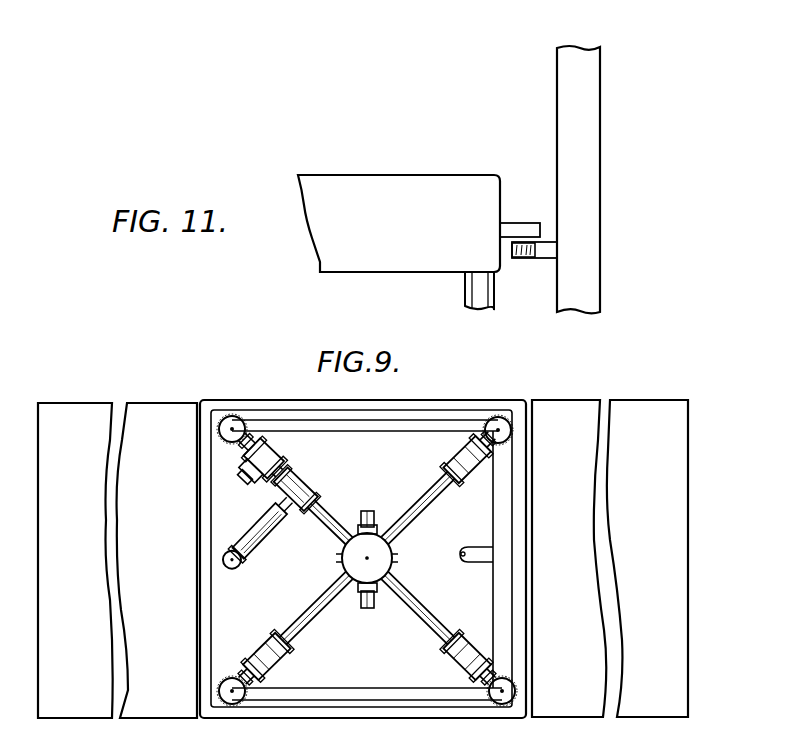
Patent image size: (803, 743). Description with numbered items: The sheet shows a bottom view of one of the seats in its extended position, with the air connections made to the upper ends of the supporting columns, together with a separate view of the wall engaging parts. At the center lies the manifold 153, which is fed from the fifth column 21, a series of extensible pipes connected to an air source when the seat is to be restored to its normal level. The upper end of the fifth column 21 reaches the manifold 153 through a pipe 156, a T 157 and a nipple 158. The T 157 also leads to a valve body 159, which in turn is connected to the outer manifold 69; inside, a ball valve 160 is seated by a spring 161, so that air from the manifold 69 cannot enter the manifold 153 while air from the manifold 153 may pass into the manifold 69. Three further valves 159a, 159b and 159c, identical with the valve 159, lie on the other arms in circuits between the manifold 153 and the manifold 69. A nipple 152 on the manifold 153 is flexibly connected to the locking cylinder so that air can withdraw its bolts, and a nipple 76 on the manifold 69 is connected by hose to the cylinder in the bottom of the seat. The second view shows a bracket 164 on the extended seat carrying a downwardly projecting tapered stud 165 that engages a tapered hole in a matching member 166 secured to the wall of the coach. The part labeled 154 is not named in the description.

In FIG. 9, the fifth column 21 is at (233, 574).
In FIG. 9, the manifold 69 is at (505, 492).
In FIG. 9, the nipple 76 is at (472, 549).
In FIG. 9, the nipple 152 is at (378, 518).
In FIG. 9, the manifold 153 is at (393, 558).
In FIG. 9, the lower hub shaft 154 is at (364, 604).
In FIG. 9, the pipe 156 is at (265, 538).
In FIG. 9, the T 157 is at (304, 488).
In FIG. 9, the nipple 158 is at (346, 530).
In FIG. 9, the valve body 159 is at (281, 467).
In FIG. 9, the valve 159a is at (452, 470).
In FIG. 9, the valve 159b is at (468, 640).
In FIG. 9, the valve 159c is at (277, 663).
In FIG. 9, the ball valve 160 is at (263, 470).
In FIG. 9, the spring 161 is at (250, 464).
In FIG. 11, the bracket 164 is at (512, 230).
In FIG. 11, the tapered stud 165 is at (521, 258).
In FIG. 11, the matching member 166 is at (547, 260).